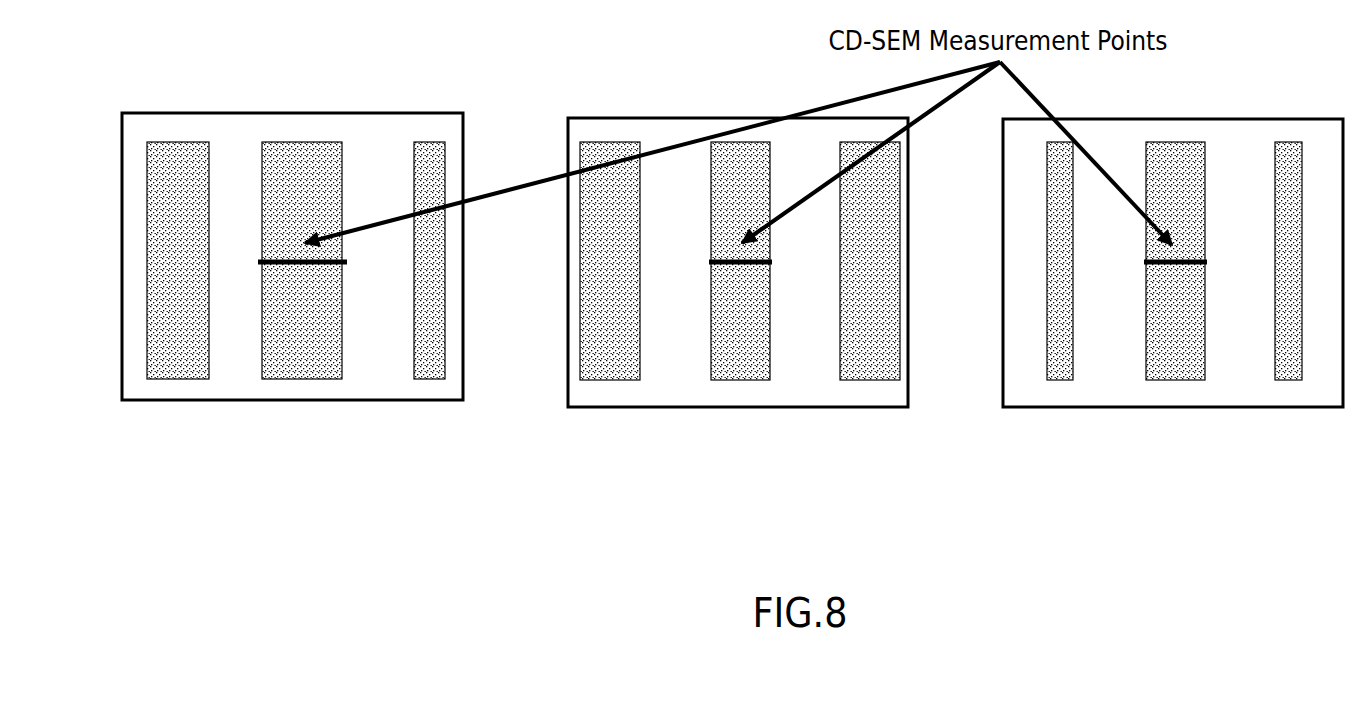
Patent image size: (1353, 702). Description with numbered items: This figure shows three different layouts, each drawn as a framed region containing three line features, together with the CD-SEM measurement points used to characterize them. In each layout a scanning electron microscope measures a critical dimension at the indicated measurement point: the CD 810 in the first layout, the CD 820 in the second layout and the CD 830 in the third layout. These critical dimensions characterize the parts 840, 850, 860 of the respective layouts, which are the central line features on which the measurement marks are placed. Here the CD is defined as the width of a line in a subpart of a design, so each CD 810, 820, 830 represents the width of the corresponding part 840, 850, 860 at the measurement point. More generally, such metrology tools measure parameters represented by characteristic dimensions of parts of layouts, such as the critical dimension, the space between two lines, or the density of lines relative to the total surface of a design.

The CD 810 is at (299, 265).
The CD 820 is at (739, 265).
The CD 830 is at (1177, 265).
The part of the layout 840 is at (306, 348).
The part of the layout 850 is at (743, 353).
The part of the layout 860 is at (1175, 360).